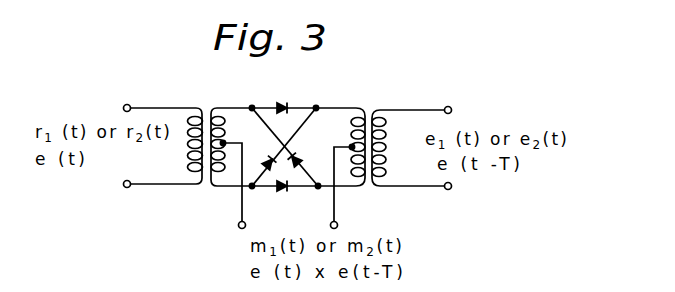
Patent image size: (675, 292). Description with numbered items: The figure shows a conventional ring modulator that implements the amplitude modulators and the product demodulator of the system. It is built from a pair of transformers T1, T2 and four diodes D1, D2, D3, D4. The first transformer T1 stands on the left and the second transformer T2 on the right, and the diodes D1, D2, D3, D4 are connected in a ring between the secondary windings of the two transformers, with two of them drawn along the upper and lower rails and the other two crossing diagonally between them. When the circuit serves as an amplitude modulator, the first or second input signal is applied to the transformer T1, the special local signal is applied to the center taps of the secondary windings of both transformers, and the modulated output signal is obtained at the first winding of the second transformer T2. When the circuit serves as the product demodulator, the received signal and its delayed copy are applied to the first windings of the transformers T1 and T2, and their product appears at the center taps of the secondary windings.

The transformer T1 is at (207, 105).
The second transformer T2 is at (368, 106).
The diode D1 is at (283, 103).
The diode D2 is at (281, 192).
The diode D3 is at (263, 157).
The diode D4 is at (298, 156).